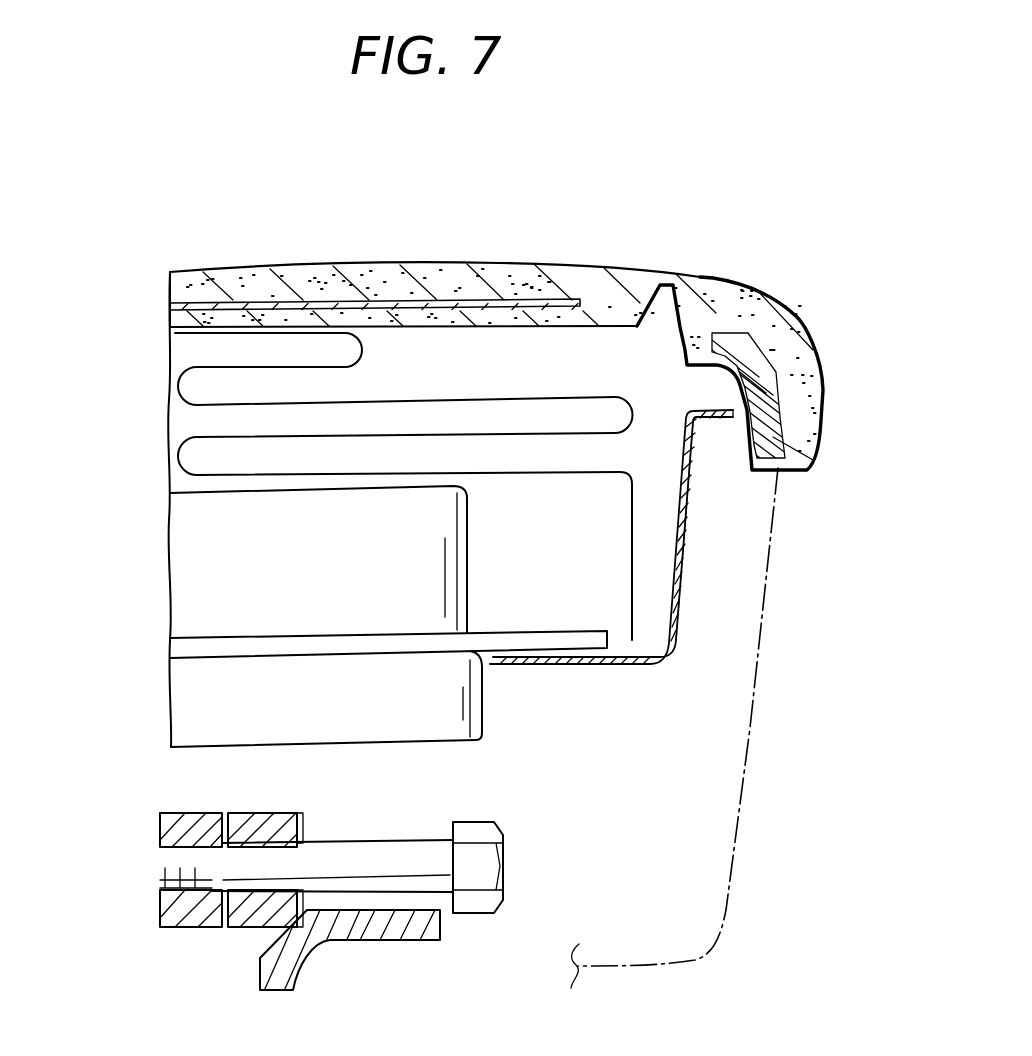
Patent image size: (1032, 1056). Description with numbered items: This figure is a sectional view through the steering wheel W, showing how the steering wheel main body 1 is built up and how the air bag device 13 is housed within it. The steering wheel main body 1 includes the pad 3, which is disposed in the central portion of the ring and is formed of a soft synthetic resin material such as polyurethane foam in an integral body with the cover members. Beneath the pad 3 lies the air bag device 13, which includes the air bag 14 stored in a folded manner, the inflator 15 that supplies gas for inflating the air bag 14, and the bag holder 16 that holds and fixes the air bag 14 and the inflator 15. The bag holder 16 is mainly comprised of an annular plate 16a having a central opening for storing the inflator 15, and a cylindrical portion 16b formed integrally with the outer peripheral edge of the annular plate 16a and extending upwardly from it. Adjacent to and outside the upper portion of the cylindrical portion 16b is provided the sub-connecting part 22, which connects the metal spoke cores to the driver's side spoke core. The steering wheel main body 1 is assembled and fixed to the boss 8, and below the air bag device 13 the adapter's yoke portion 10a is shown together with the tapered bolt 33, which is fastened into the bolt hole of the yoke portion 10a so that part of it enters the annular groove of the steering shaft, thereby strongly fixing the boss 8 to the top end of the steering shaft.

The steering wheel main body 1 is at (312, 252).
The pad 3 is at (487, 263).
The air bag device 13 is at (161, 602).
The air bag 14 is at (576, 469).
The inflator 15 is at (490, 715).
The bag holder 16 is at (677, 621).
The annular plate 16a is at (597, 664).
The cylindrical portion 16b is at (694, 480).
The sub-connecting part 22 is at (770, 393).
The tapered bolt 33 is at (382, 841).
The yoke portion 10a is at (250, 925).
The boss 8 is at (363, 945).
The steering wheel W is at (730, 249).